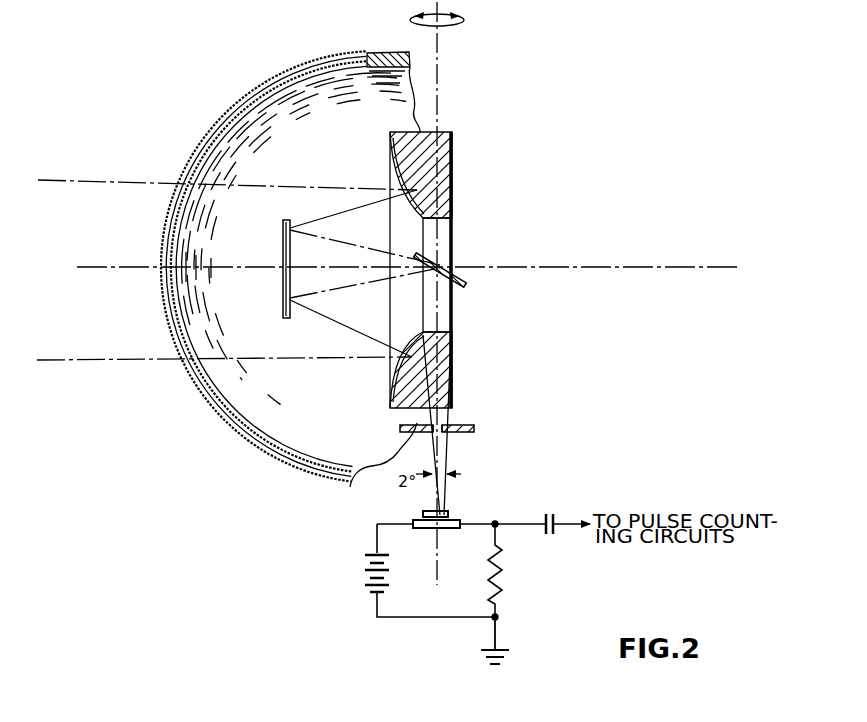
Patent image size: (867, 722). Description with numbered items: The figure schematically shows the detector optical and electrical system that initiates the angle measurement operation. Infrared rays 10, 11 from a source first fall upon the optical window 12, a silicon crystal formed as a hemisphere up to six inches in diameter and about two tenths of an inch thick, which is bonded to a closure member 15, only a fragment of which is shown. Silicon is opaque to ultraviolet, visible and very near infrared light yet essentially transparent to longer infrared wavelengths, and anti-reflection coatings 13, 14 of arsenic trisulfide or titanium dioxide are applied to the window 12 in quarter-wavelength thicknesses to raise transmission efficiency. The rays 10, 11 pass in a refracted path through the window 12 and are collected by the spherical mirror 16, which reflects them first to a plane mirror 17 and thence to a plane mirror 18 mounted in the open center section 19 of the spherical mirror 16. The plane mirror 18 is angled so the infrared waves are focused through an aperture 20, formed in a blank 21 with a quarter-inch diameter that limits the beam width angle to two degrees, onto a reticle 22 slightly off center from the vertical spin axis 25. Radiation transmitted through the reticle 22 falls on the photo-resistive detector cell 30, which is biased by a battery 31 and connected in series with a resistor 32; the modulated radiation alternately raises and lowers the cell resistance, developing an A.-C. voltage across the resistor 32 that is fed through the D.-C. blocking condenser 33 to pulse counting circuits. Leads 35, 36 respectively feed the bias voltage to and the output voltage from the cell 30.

The ray 10 is at (112, 180).
The ray 11 is at (118, 359).
The optical window 12 is at (211, 137).
The anti-reflection coating 13 is at (250, 97).
The anti-reflection coating 14 is at (300, 78).
The closure member 15 is at (378, 52).
The spherical mirror 16 is at (446, 132).
The plane mirror 17 is at (283, 237).
The plane mirror 18 is at (465, 286).
The open center section 19 is at (450, 230).
The aperture 20 is at (441, 426).
The blank 21 is at (475, 429).
The reticle 22 is at (424, 512).
The vertical spin axis 25 is at (438, 72).
The detector cell 30 is at (460, 520).
The battery 31 is at (370, 576).
The resistor 32 is at (502, 571).
The D.-C. blocking condenser 33 is at (548, 516).
The lead 35 is at (377, 537).
The lead 36 is at (497, 522).